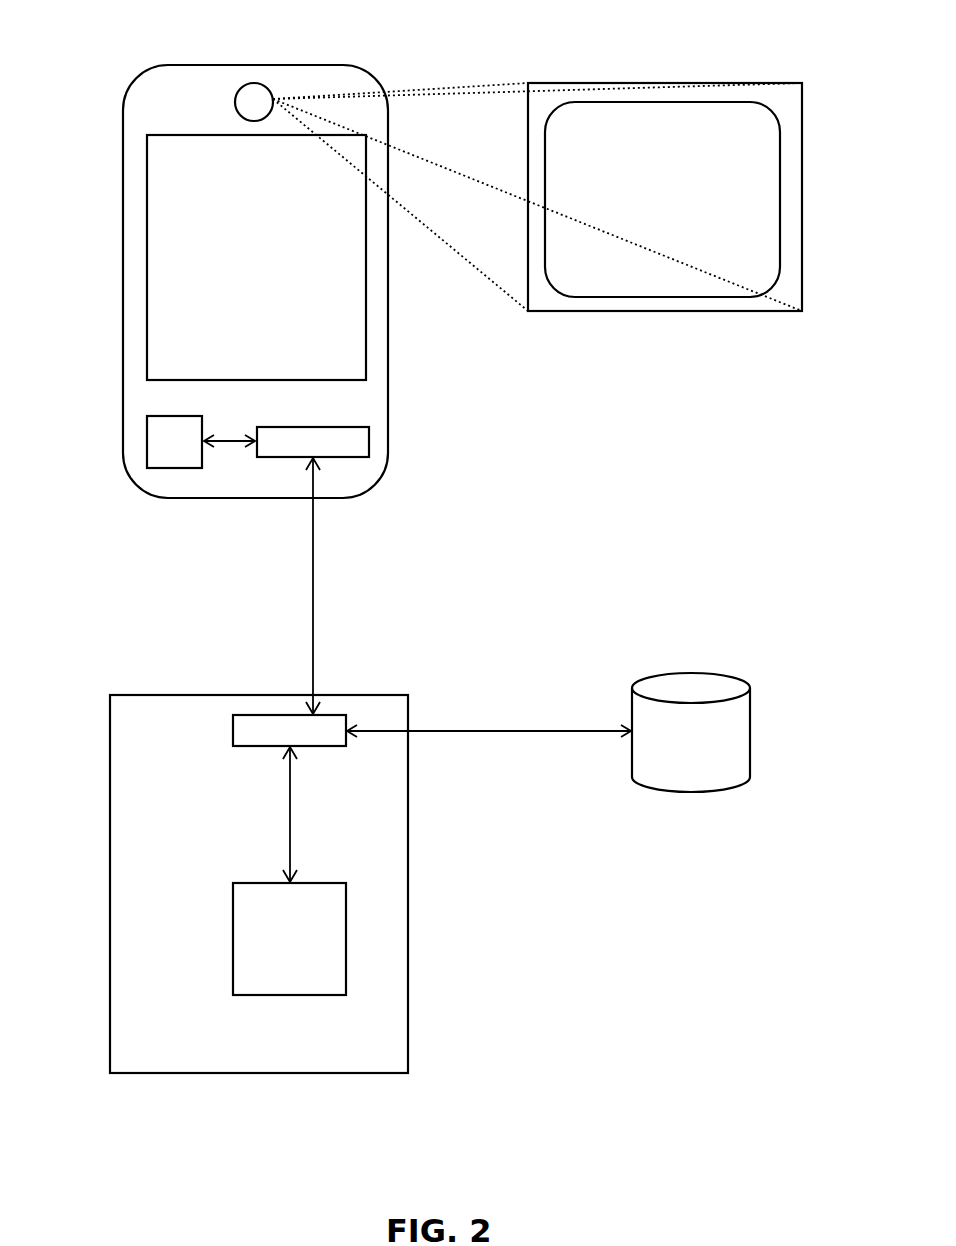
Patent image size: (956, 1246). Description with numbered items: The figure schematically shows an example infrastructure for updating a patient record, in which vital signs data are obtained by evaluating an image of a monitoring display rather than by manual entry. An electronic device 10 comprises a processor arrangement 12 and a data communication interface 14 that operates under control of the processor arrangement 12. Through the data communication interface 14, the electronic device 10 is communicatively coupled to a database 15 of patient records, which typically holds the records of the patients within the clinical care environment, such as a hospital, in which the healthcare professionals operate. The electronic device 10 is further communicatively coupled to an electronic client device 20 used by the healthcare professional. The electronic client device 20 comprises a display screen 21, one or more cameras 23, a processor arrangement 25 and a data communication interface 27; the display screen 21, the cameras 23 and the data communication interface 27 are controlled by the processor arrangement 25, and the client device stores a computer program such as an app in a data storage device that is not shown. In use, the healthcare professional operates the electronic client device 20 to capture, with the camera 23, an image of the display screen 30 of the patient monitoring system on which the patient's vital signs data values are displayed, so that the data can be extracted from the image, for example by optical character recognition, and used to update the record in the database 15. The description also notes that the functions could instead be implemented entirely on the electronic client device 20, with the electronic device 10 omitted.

The electronic device 10 is at (408, 968).
The processor arrangement 12 is at (315, 968).
The data communication interface 14 is at (320, 747).
The database 15 is at (693, 783).
The electronic client device 20 is at (384, 399).
The display screen 21 is at (163, 258).
The camera 23 is at (255, 100).
The processor arrangement 25 is at (178, 468).
The data communication interface 27 is at (362, 458).
The display screen 30 is at (680, 312).